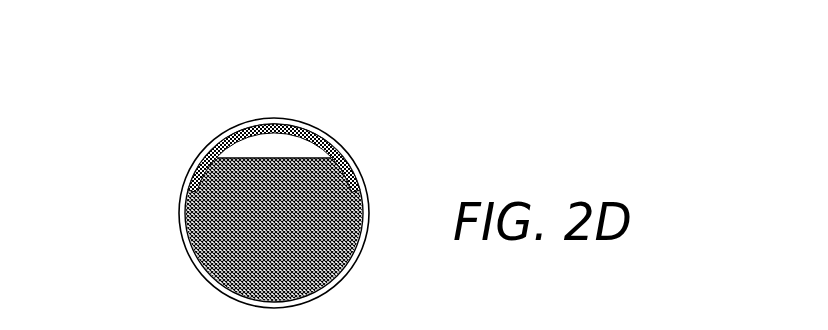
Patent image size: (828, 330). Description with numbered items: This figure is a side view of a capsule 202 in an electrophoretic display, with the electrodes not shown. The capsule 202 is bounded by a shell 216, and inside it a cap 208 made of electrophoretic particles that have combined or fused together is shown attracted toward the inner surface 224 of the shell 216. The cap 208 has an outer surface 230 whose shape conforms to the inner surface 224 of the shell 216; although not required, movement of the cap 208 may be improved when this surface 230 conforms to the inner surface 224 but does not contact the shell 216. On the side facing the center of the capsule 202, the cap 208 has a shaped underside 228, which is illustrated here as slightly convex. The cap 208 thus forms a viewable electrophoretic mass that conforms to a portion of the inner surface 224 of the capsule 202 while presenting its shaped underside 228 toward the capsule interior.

The capsule 202 is at (212, 123).
The shell 216 is at (373, 247).
The shaped underside 228 is at (289, 166).
The cap 208 is at (293, 142).
The surface of the cap 230 is at (340, 150).
The inner surface of the shell 224 is at (203, 180).